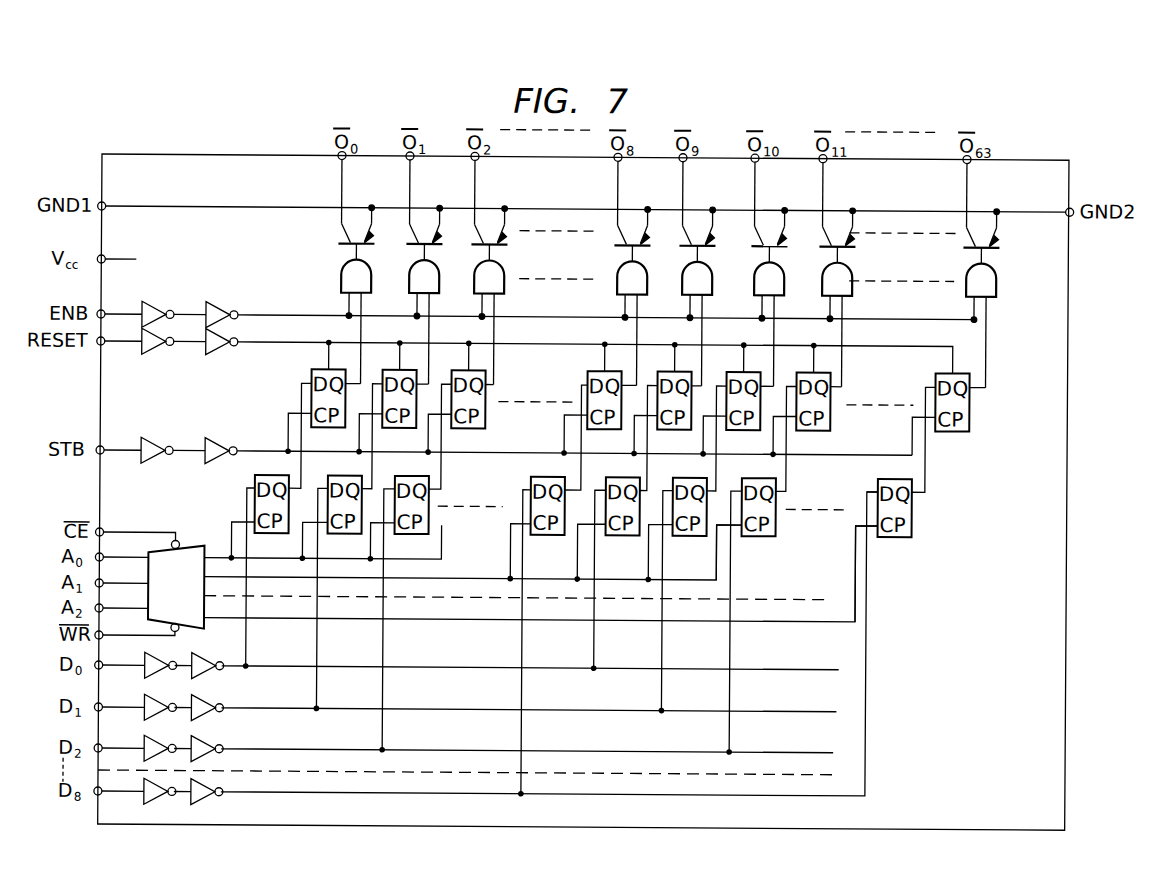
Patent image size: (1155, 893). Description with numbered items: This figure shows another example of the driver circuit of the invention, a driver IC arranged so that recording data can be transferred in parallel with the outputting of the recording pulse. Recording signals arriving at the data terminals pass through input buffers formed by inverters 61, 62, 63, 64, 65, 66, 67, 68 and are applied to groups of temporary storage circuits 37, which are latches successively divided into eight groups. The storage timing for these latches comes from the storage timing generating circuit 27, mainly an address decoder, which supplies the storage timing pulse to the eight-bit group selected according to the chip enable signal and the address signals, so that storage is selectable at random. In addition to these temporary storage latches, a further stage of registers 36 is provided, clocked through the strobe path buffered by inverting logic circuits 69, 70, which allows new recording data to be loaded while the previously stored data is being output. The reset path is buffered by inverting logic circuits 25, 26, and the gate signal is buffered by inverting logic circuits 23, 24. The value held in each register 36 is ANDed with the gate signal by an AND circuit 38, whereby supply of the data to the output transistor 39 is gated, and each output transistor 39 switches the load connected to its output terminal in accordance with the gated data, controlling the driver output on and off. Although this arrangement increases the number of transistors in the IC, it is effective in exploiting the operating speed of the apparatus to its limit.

The inverting logic circuit 23 is at (165, 303).
The inverting logic circuit 24 is at (229, 303).
The inverting logic circuit 25 is at (165, 353).
The inverting logic circuit 26 is at (229, 353).
The storage timing generating circuit 27 is at (183, 546).
The register 36 is at (313, 376).
The temporary storage circuit 37 is at (257, 482).
The AND circuit 38 is at (373, 291).
The output transistor 39 is at (366, 246).
The inverter 61 is at (169, 658).
The inverter 62 is at (216, 658).
The inverter 63 is at (169, 700).
The inverter 64 is at (216, 700).
The inverter 65 is at (169, 741).
The inverter 66 is at (216, 741).
The inverter 67 is at (169, 799).
The inverter 68 is at (216, 799).
The inverting logic circuit 69 is at (165, 440).
The inverting logic circuit 70 is at (229, 440).